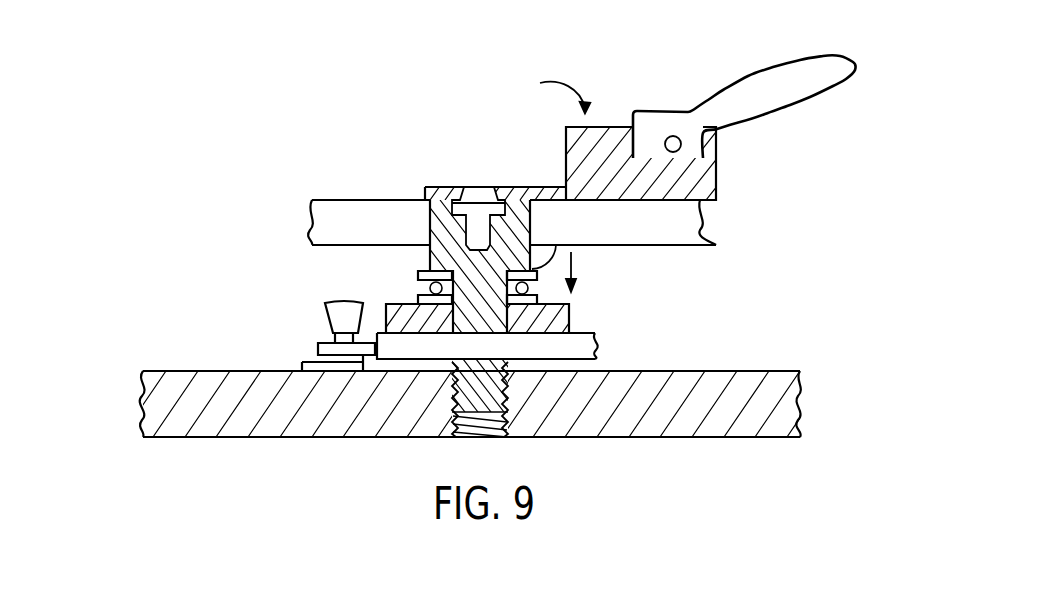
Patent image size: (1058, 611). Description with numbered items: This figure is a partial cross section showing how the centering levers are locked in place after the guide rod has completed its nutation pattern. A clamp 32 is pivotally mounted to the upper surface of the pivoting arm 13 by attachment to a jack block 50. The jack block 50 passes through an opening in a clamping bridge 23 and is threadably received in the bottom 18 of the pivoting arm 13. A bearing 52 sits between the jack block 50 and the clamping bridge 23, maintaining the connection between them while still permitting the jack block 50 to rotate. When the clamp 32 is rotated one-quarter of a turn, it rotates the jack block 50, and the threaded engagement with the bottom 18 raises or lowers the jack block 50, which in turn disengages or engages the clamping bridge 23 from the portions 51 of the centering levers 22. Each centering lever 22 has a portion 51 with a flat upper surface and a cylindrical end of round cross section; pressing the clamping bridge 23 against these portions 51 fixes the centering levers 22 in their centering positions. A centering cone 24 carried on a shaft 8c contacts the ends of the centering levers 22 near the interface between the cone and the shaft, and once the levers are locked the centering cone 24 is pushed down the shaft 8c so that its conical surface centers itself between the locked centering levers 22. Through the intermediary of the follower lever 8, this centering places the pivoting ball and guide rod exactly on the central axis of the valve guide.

The follower lever 8 is at (303, 365).
The shaft 8c is at (330, 337).
The pivoting arm 13 is at (680, 226).
The bottom 18 is at (160, 393).
The centering lever 22 is at (600, 345).
The clamping bridge 23 is at (572, 324).
The centering cone 24 is at (337, 310).
The clamp 32 is at (705, 184).
The jack block 50 is at (443, 213).
The portion 51 is at (537, 352).
The bearing 52 is at (552, 244).